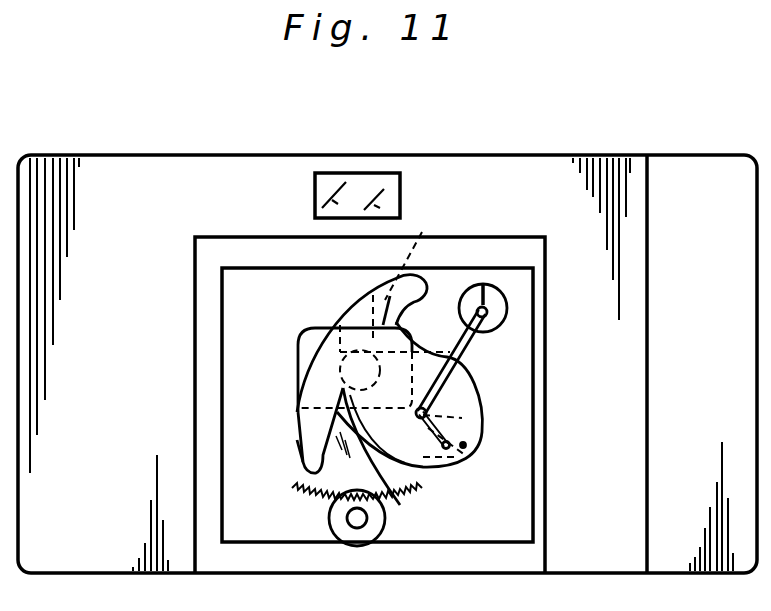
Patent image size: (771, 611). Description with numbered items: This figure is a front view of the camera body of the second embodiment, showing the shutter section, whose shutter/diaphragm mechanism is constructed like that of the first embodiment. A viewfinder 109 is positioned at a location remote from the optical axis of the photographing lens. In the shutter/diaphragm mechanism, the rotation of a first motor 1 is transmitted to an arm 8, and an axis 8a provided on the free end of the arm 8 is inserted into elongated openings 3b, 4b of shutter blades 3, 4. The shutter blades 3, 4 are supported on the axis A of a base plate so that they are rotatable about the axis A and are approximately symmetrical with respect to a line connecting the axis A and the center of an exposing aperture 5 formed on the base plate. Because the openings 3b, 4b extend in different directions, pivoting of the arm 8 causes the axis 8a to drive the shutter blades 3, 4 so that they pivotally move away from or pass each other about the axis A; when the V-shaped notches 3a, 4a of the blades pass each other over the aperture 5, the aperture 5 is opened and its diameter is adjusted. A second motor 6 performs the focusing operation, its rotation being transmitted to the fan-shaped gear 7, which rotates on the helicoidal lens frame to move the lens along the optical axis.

The viewfinder 109 is at (315, 198).
The first motor 1 is at (497, 326).
The shutter blade 3 is at (433, 350).
The V-shaped notch 3a is at (414, 251).
The elongated opening 3b is at (470, 444).
The shutter blade 4 is at (422, 345).
The V-shaped notch 4a is at (363, 462).
The elongated opening 4b is at (460, 463).
The exposing aperture 5 is at (342, 318).
The second motor 6 is at (330, 518).
The fan-shaped gear 7 is at (330, 477).
The arm 8 is at (413, 394).
The axis 8a is at (432, 467).
The axis A is at (476, 452).